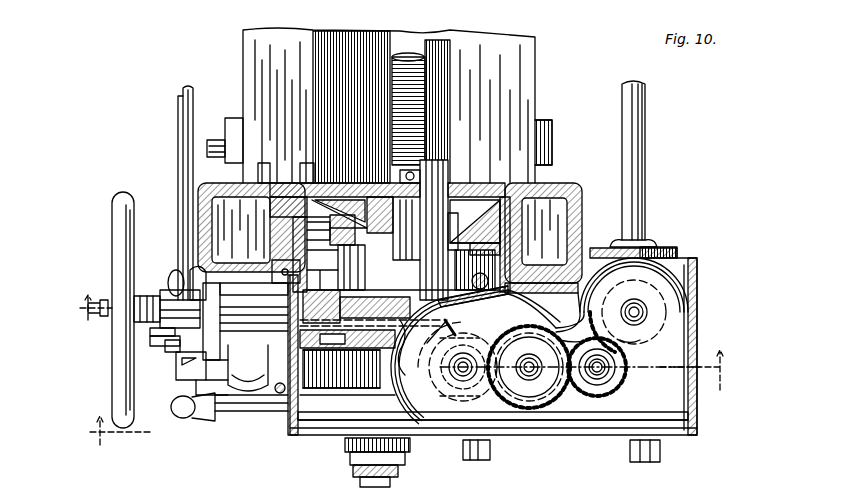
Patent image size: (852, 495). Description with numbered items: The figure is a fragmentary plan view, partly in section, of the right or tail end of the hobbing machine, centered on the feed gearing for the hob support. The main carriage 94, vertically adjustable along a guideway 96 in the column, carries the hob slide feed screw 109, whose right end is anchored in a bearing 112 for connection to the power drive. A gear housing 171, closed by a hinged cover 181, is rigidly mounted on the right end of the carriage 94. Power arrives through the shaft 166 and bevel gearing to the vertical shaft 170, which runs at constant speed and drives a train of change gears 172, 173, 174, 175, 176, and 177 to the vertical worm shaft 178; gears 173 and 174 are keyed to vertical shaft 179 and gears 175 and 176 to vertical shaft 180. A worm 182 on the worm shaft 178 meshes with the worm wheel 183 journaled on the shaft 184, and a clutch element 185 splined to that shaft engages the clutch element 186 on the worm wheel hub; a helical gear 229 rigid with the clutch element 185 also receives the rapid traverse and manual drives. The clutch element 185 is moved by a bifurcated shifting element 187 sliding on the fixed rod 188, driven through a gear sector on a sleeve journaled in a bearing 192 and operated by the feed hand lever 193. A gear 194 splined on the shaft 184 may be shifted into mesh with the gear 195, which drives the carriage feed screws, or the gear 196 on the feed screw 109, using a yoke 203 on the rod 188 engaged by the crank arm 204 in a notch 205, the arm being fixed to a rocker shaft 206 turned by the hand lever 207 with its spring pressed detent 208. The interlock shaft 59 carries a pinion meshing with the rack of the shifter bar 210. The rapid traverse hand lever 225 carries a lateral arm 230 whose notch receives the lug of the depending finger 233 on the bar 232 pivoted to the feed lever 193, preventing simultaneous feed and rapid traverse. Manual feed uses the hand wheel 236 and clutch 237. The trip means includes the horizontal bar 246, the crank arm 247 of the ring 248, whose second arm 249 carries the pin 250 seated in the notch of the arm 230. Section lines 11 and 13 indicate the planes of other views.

The main carriage 94 is at (243, 45).
The feed screw 109 is at (418, 80).
The bearing 112 is at (452, 165).
The guideway 96 is at (538, 160).
The notch 205 is at (330, 245).
The crank arm 204 is at (332, 252).
The rocker shaft 206 is at (332, 265).
The shaft 59 is at (485, 275).
The yoke 203 is at (372, 200).
The gear 194 is at (318, 215).
The gear 195 is at (318, 163).
The fixed rod 188 is at (278, 183).
The gear 196 is at (428, 185).
The shaft 184 is at (435, 240).
The shifter bar 210 is at (490, 235).
The shaft 166 is at (643, 185).
The hinged cover 181 is at (695, 420).
The gear housing 171 is at (695, 312).
The second arm 249 is at (215, 363).
The worm wheel 183 is at (322, 375).
The clutch element 186 is at (345, 385).
The clutch element 185 is at (432, 372).
The section line 13 is at (259, 319).
The section line 11 is at (414, 397).
The worm shaft 178 is at (463, 380).
The worm 182 is at (472, 378).
The helical gear 229 is at (470, 340).
The change gear 177 is at (500, 348).
The change gear 175 is at (556, 342).
The change gear 176 is at (500, 378).
The vertical shaft 180 is at (532, 382).
The vertical shaft 179 is at (597, 385).
The change gear 174 is at (612, 372).
The change gear 173 is at (615, 350).
The vertical shaft 170 is at (645, 302).
The change gear 172 is at (660, 345).
The hand wheel 236 is at (118, 210).
The bar 232 is at (183, 100).
The horizontal bar 246 is at (193, 95).
The hand lever 193 is at (170, 278).
The bearing 192 is at (197, 272).
The clutch 237 is at (150, 305).
The crank arm 247 is at (150, 331).
The ring 248 is at (152, 341).
The depending finger 233 is at (166, 348).
The lateral arm 230 is at (178, 362).
The pin 250 is at (185, 378).
The hand lever 225 is at (186, 418).
The hand lever 207 is at (248, 392).
The spring pressed detent 208 is at (280, 394).
The shifting element 187 is at (272, 290).